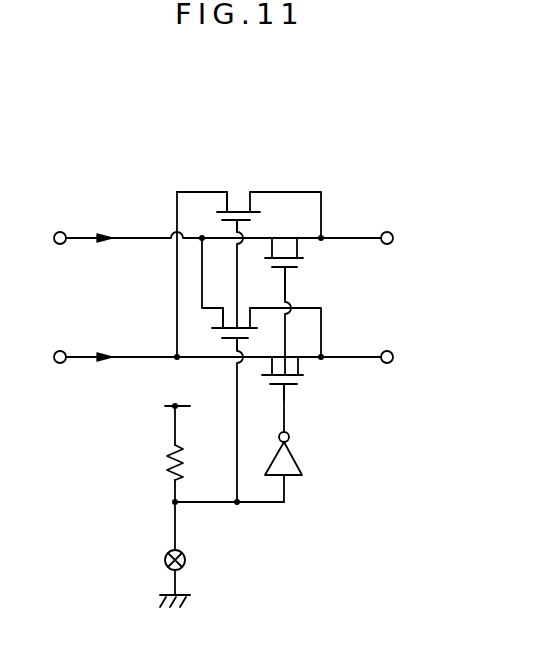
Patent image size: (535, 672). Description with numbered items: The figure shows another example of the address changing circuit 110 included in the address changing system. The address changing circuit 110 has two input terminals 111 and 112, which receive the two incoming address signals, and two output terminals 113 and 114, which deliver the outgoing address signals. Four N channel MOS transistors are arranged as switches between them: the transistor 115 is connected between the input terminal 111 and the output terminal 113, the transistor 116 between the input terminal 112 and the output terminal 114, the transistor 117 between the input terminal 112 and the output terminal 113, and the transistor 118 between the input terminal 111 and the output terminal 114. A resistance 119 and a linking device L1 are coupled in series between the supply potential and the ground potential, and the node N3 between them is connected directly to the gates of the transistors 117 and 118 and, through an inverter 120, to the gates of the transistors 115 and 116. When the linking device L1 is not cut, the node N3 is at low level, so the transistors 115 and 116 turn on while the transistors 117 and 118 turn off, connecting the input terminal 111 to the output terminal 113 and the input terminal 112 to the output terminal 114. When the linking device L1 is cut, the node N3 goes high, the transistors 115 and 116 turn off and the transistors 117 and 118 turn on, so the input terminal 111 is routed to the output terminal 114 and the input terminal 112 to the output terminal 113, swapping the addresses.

The address changing circuit 110 is at (298, 517).
The input terminal 111 is at (62, 232).
The input terminal 112 is at (63, 350).
The output terminal 113 is at (392, 233).
The output terminal 114 is at (392, 352).
The N channel MOS transistor 115 is at (287, 270).
The N channel MOS transistor 116 is at (290, 388).
The N channel MOS transistor 117 is at (237, 192).
The N channel MOS transistor 118 is at (225, 341).
The resistance 119 is at (165, 460).
The inverter 120 is at (294, 452).
The node N3 is at (178, 507).
The linking device L1 is at (185, 565).